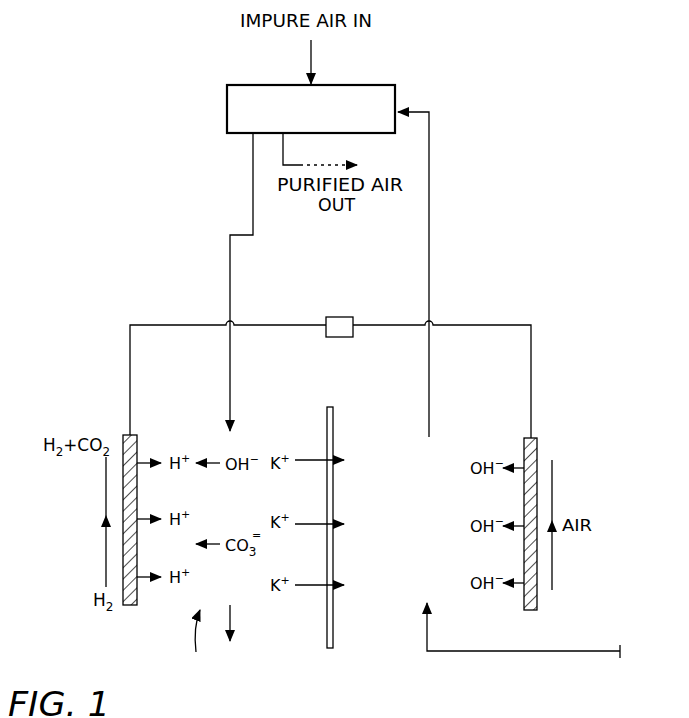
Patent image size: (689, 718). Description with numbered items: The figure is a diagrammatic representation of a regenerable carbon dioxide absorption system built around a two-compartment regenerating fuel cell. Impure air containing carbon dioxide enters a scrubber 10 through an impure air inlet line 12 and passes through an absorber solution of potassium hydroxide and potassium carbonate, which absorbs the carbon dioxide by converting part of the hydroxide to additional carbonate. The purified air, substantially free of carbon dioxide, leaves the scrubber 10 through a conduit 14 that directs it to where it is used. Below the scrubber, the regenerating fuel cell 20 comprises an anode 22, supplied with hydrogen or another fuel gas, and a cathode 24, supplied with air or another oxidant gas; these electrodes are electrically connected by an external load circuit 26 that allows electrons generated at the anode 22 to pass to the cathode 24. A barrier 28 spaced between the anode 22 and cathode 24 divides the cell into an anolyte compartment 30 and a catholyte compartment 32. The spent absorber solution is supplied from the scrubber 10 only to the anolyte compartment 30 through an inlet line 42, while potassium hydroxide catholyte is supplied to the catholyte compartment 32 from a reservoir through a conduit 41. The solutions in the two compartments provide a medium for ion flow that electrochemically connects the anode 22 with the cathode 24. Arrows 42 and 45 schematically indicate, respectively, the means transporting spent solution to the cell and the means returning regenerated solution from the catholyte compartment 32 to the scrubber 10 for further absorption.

The scrubber 10 is at (216, 102).
The impure air inlet line 12 is at (311, 51).
The conduit 14 is at (283, 148).
The regenerating fuel cell 20 is at (177, 302).
The anode 22 is at (132, 605).
The cathode 24 is at (530, 610).
The external load circuit 26 is at (340, 317).
The barrier 28 is at (327, 632).
The anolyte compartment 30 is at (209, 642).
The catholyte compartment 32 is at (376, 622).
The inlet line 41 is at (487, 653).
The inlet line 42 is at (230, 292).
The solution return means 45 is at (429, 167).